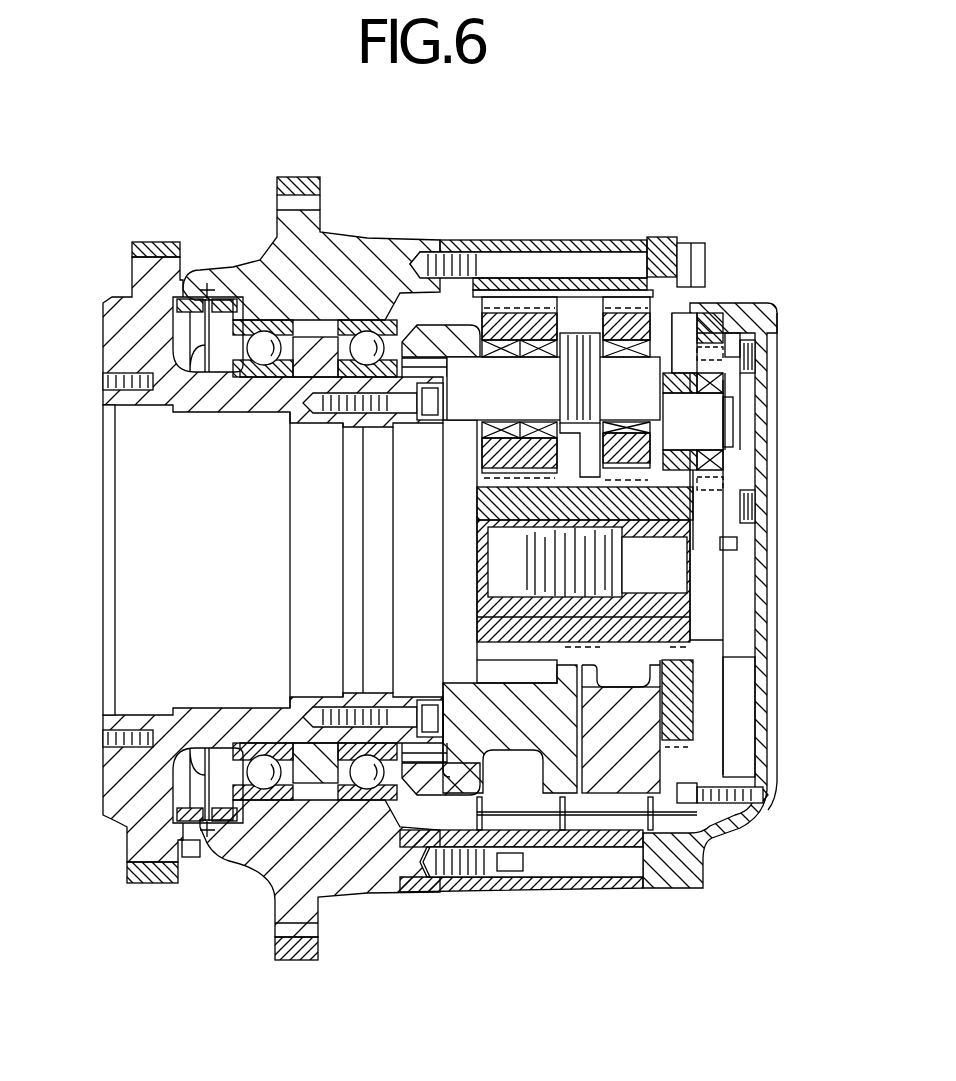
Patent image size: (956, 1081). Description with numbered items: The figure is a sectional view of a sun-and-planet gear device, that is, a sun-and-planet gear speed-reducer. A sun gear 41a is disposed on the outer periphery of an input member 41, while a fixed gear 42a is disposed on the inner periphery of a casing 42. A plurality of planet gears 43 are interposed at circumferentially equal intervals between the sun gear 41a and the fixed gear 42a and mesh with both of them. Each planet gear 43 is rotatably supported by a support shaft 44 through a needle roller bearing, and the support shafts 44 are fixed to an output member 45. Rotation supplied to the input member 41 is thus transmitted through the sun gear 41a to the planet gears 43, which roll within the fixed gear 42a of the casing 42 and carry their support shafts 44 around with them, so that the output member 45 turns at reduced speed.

The output member 45 is at (291, 562).
The casing 42 is at (386, 237).
The fixed gear 42a is at (482, 300).
The planet gear 43 is at (512, 323).
The support shaft 44 is at (465, 413).
The input member 41 is at (705, 510).
The sun gear 41a is at (740, 487).